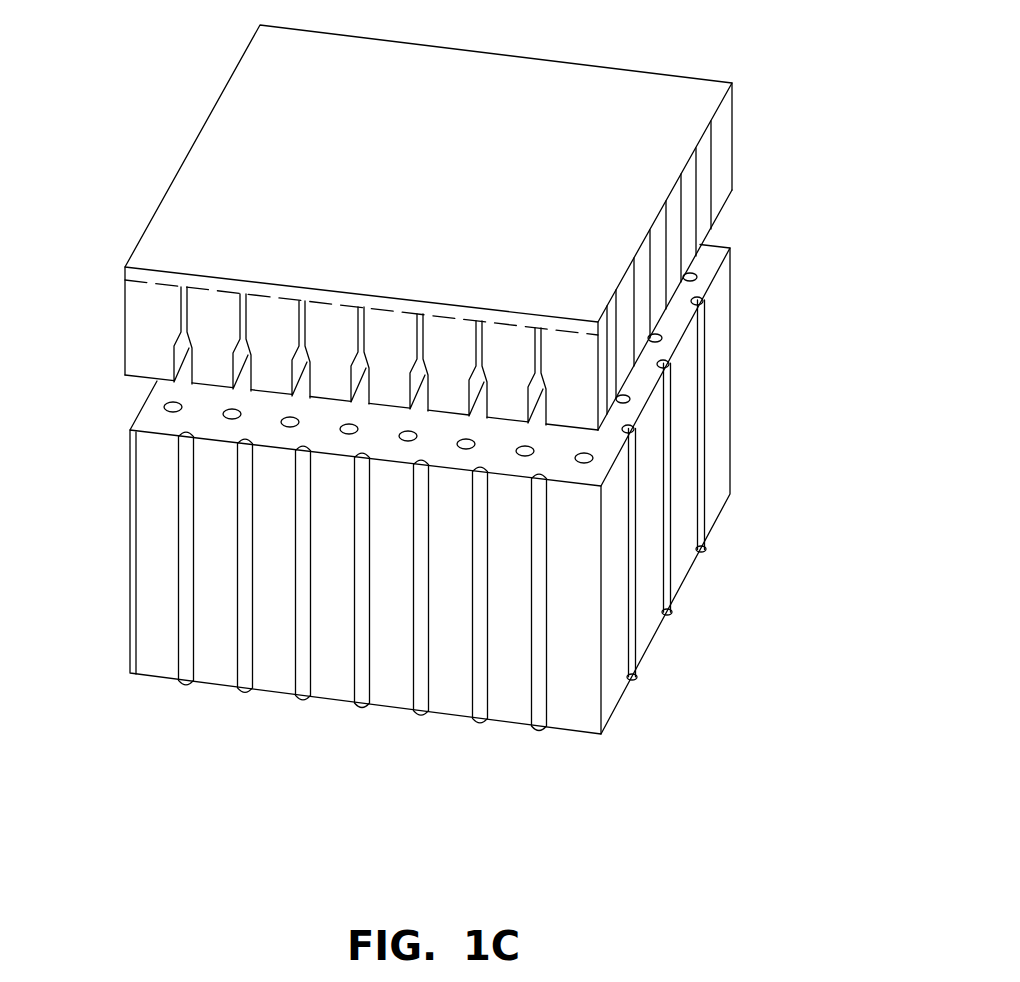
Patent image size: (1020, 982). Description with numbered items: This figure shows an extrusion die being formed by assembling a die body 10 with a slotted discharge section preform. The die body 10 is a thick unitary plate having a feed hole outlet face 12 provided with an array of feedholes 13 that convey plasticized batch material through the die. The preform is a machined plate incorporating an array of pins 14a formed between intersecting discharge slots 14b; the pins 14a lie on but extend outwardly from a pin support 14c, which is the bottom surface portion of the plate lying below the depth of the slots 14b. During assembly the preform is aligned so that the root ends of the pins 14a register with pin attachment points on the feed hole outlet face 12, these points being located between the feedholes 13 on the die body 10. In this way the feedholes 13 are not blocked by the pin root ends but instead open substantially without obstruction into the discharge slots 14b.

The die body 10 is at (435, 404).
The feed hole outlet face 12 is at (374, 490).
The feedholes 13 is at (245, 555).
The pins 14a is at (680, 253).
The discharge slots 14b is at (242, 343).
The pin support 14c is at (723, 110).